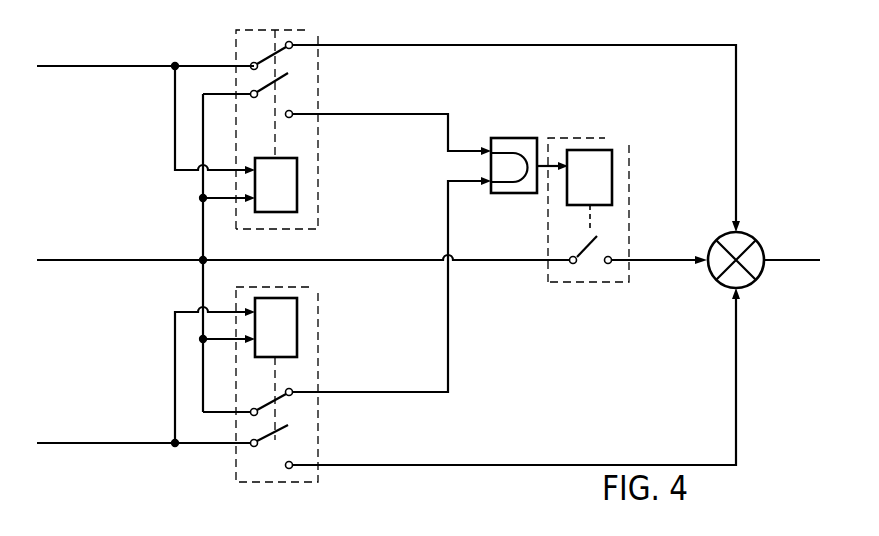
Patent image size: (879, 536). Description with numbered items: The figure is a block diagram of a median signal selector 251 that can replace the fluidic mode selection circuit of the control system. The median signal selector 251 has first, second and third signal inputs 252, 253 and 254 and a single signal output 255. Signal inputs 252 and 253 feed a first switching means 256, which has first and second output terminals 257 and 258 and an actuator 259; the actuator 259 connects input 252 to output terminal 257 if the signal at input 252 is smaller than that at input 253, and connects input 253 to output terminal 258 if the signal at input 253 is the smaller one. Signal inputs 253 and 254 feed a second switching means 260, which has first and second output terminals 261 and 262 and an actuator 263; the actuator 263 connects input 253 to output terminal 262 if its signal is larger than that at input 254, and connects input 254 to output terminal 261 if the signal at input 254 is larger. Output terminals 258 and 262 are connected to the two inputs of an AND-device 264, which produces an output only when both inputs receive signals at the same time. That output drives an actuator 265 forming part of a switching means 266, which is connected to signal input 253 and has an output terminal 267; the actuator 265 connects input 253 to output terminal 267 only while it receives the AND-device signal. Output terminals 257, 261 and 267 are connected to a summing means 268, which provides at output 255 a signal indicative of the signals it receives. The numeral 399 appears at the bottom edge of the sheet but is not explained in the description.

The median signal selector 251 is at (602, 364).
The first signal input 252 is at (68, 66).
The second signal input 253 is at (62, 260).
The third signal input 254 is at (62, 443).
The signal output 255 is at (785, 260).
The first switching means 256 is at (318, 30).
The first output terminal 257 is at (340, 45).
The second output terminal 258 is at (342, 114).
The actuator 259 is at (297, 176).
The second switching means 260 is at (318, 287).
The first output terminal 261 is at (365, 465).
The second output terminal 262 is at (360, 392).
The actuator 263 is at (297, 326).
The AND-device 264 is at (502, 138).
The actuator 265 is at (612, 176).
The switching means 266 is at (612, 138).
The output terminal 267 is at (637, 260).
The summing means 268 is at (755, 238).
The reference numeral (partially cut) 399 is at (334, 535).